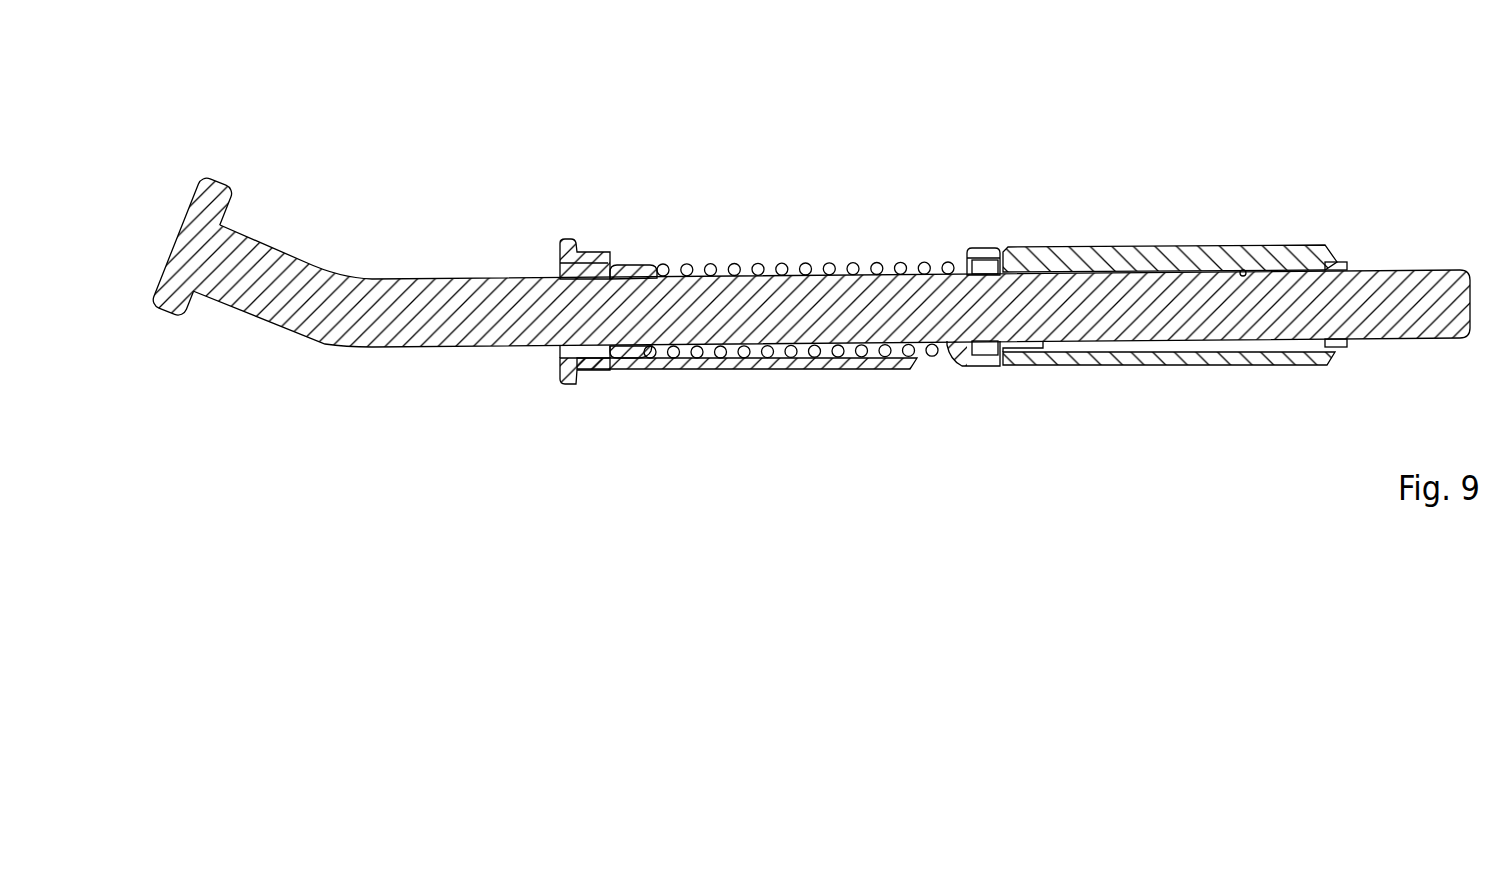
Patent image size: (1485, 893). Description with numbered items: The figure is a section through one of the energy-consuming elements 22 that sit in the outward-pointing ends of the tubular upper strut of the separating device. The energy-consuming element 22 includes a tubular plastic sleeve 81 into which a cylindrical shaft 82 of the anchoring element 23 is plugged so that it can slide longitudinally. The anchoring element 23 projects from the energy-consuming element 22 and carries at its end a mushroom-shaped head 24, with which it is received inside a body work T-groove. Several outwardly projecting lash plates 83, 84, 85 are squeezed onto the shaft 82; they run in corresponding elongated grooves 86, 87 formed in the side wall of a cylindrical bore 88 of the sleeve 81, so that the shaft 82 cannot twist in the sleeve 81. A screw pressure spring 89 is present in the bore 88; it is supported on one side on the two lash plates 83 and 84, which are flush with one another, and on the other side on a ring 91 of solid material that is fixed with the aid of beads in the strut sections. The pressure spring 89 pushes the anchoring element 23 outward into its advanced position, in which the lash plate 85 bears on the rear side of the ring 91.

The energy-consuming element 22 is at (800, 122).
The anchoring element 23 is at (354, 222).
The mushroom-shaped head 24 is at (213, 178).
The tubular plastic sleeve 81 is at (1100, 245).
The cylindrical shaft 82 is at (390, 339).
The lash plate 83 is at (630, 266).
The lash plate 84 is at (622, 361).
The lash plate 85 is at (1030, 357).
The elongated groove 86 is at (1172, 349).
The elongated groove 87 is at (592, 268).
The cylindrical bore 88 is at (1243, 268).
The screw pressure spring 89 is at (758, 265).
The ring 91 is at (978, 248).